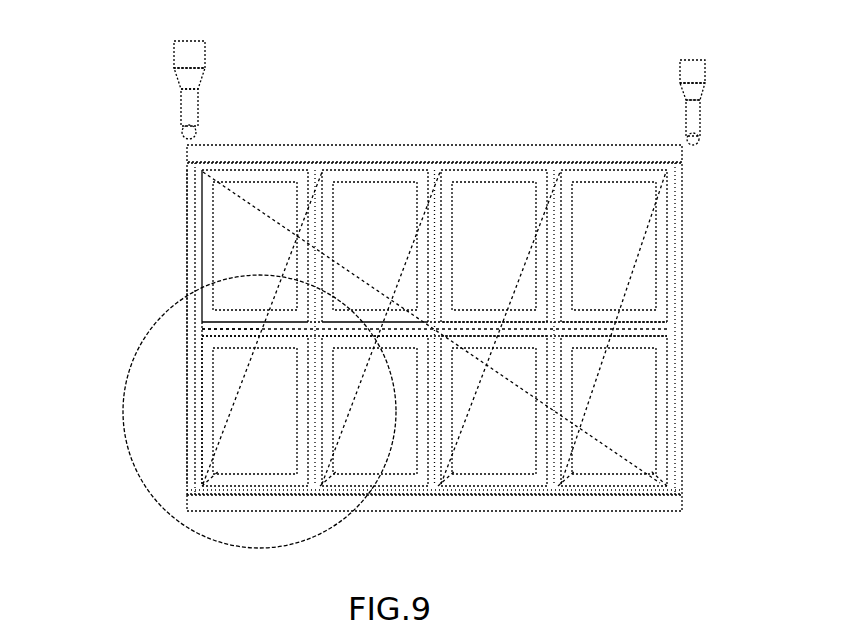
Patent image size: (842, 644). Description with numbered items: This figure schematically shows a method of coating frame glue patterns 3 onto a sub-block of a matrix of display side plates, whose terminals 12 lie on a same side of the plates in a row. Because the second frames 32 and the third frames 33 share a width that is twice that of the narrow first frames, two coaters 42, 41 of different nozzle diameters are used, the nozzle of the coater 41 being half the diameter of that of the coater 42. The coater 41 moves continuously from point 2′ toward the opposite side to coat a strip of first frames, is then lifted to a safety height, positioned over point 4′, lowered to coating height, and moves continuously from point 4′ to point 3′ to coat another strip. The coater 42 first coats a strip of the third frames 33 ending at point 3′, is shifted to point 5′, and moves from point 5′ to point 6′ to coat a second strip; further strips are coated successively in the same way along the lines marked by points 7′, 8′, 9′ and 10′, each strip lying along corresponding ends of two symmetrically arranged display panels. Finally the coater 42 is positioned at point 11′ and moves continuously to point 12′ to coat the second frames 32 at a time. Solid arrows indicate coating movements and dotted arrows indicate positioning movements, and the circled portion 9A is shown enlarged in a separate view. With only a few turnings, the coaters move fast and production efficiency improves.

The frame glue pattern 3 is at (194, 264).
The third frame 33 is at (194, 248).
The second frame 32 is at (225, 330).
The terminal 12 is at (188, 150).
The point 12' 12′ is at (226, 328).
The coater 42 is at (185, 55).
The coater 41 is at (693, 70).
The circled portion 9A is at (126, 450).
The point 11' 11′ is at (716, 467).
The point 5' 5′ is at (266, 297).
The position 7 7′ is at (385, 297).
The position 9 9′ is at (505, 297).
The point 2' 2′ is at (620, 297).
The point 3' 3′ is at (205, 504).
The point 6' 6′ is at (324, 504).
The position 8 8′ is at (441, 504).
The position 10 10′ is at (561, 504).
The point 4' 4′ is at (668, 504).